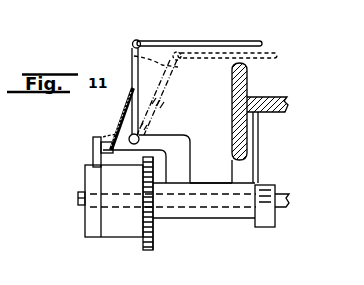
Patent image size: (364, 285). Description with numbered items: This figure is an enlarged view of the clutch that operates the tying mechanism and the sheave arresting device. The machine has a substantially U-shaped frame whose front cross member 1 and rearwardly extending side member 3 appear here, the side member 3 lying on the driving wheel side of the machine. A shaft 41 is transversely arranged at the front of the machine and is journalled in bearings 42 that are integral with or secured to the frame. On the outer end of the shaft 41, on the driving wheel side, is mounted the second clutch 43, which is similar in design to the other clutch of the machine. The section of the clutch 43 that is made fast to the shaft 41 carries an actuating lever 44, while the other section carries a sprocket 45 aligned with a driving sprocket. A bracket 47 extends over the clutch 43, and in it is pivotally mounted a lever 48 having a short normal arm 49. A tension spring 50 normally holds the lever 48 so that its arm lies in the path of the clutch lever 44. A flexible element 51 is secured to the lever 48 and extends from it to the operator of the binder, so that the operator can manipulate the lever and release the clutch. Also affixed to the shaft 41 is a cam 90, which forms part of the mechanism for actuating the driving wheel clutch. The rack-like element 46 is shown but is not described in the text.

The front cross member 1 is at (283, 97).
The side member 3 is at (232, 94).
The shaft 41 is at (78, 200).
The bearings 42 is at (202, 219).
The second clutch 43 is at (113, 239).
The actuating lever 44 is at (93, 152).
The sprocket 45 is at (153, 247).
The rack teeth 46 is at (145, 251).
The bracket 47 is at (193, 150).
The lever 48 is at (127, 49).
The short normal arm 49 is at (118, 133).
The tension spring 50 is at (123, 117).
The flexible element 51 is at (222, 43).
The cam 90 is at (267, 227).